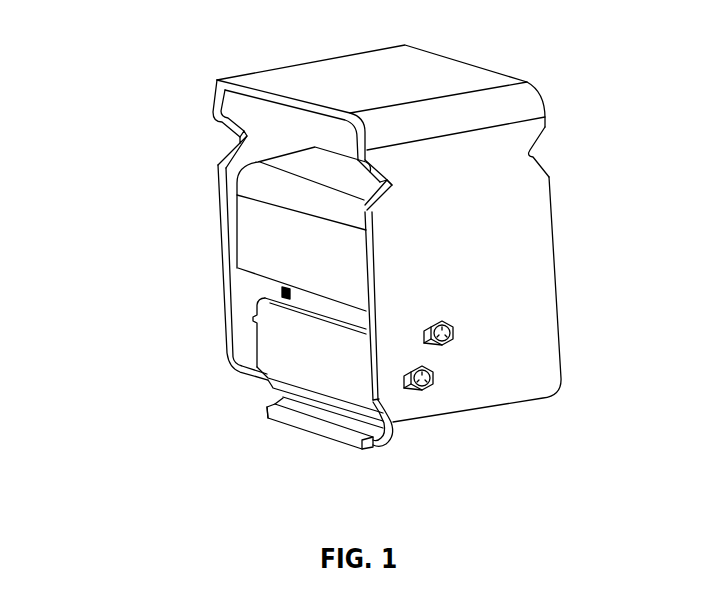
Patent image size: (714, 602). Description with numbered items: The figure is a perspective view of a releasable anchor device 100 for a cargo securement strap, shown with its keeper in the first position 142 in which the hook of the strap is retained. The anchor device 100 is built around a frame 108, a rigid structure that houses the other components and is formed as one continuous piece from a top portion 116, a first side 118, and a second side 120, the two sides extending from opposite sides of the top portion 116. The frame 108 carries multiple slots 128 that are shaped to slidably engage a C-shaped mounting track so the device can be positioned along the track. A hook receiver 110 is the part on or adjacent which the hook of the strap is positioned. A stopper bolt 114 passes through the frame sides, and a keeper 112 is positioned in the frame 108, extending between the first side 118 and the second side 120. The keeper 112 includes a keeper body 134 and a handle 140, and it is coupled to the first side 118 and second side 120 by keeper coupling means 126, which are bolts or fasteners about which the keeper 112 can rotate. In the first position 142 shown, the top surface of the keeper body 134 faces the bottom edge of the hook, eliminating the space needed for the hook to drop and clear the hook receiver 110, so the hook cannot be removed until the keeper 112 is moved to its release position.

The anchor device 100 is at (157, 60).
The frame 108 is at (552, 210).
The hook receiver 110 is at (242, 258).
The keeper 112 is at (267, 410).
The stopper bolt 114 is at (457, 332).
The top portion 116 is at (470, 65).
The first side 118 is at (220, 233).
The second side 120 is at (380, 263).
The keeper coupling means 126 is at (437, 378).
The slots 128 is at (223, 141).
The keeper body 134 is at (278, 352).
The handle 140 is at (389, 449).
The first position 142 is at (300, 445).